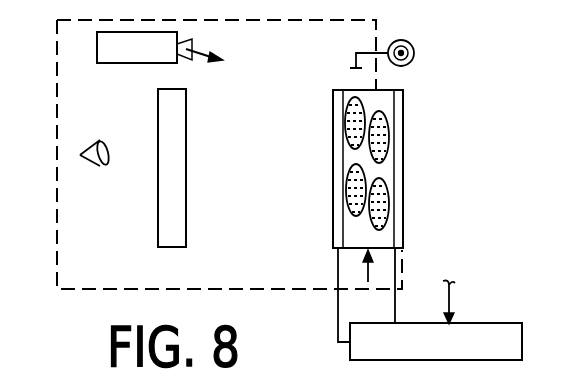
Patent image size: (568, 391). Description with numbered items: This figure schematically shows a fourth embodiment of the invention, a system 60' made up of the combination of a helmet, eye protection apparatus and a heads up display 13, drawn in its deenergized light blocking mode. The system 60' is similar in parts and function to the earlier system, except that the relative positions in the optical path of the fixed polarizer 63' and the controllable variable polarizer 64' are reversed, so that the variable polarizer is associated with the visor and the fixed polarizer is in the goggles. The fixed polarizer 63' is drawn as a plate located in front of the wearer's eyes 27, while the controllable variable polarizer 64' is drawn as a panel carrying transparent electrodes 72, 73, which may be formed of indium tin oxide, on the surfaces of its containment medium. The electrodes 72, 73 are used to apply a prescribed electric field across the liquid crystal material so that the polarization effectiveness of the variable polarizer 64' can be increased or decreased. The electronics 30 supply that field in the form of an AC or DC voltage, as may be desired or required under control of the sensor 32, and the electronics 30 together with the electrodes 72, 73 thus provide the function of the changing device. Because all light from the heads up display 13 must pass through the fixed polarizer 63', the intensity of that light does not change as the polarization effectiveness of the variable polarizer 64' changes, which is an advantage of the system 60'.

The system 60' is at (207, 154).
The heads up display 13 is at (174, 32).
The sensor 32 is at (413, 46).
The controllable variable polarizer 64' is at (406, 86).
The transparent electrode 72 is at (400, 159).
The transparent electrode 73 is at (334, 166).
The electronics 30 is at (496, 323).
The eyes 27 is at (93, 166).
The fixed polarizer 63' is at (205, 181).